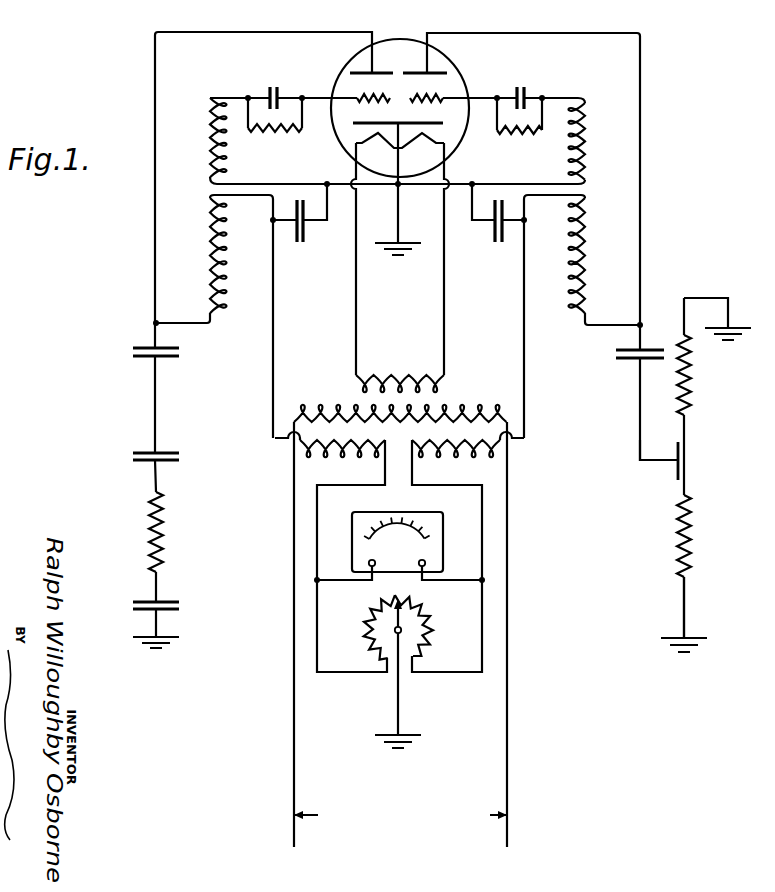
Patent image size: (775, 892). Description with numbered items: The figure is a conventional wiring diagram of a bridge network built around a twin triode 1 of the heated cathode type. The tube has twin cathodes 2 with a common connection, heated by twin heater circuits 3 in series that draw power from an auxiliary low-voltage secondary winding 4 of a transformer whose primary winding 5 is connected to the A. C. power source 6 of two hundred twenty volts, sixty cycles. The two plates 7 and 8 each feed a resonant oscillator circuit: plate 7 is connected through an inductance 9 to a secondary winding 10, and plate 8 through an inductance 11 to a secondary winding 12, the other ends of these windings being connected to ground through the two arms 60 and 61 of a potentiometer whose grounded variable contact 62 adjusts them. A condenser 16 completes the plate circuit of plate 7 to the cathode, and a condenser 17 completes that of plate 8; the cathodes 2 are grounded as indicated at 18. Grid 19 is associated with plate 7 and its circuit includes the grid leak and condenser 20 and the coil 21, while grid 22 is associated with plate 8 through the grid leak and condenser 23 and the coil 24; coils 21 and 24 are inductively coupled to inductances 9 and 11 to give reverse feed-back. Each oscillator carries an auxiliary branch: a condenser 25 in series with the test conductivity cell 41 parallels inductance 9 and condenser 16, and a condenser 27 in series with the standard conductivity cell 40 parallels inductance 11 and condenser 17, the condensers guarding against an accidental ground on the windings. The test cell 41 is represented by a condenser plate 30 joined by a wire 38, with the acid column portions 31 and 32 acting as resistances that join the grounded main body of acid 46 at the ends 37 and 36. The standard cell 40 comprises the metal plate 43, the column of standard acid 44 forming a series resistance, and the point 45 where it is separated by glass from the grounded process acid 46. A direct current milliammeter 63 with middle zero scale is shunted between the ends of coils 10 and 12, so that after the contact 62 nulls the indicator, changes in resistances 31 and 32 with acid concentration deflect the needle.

The twin triode 1 is at (343, 153).
The cathodes 2 is at (347, 127).
The heater circuits 3 is at (380, 138).
The auxiliary low-voltage secondary winding 4 is at (382, 374).
The primary winding 5 is at (322, 405).
The A. C. power source 6 is at (418, 810).
The plate 7 is at (435, 67).
The plate 8 is at (352, 70).
The inductance 9 is at (575, 312).
The secondary winding 10 is at (470, 455).
The inductance 11 is at (224, 314).
The secondary winding 12 is at (330, 452).
The condenser 16 is at (496, 243).
The condenser 17 is at (300, 243).
The ground 18 is at (398, 206).
The grid 19 is at (436, 92).
The grid leak and condenser 20 is at (530, 105).
The coil 21 is at (587, 118).
The grid 22 is at (358, 97).
The grid leak and condenser 23 is at (260, 104).
The coil 24 is at (210, 97).
The condenser 25 is at (616, 356).
The condenser 27 is at (180, 355).
The condenser plate 30 is at (674, 468).
The resistance 31 is at (690, 402).
The resistance 32 is at (692, 532).
The lower end 36 is at (687, 588).
The upper end 37 is at (684, 318).
The wire 38 is at (639, 449).
The standard conductivity cell 40 is at (150, 710).
The test conductivity cell 41 is at (661, 708).
The metal plate 43 is at (135, 454).
The column of standard acid 44 is at (148, 522).
The acid body point 45 is at (148, 600).
The body of process acid 46 is at (144, 612).
The potentiometer arm 60 is at (430, 637).
The potentiometer arm 61 is at (368, 640).
The variable contact 62 is at (396, 690).
The milliammeter 63 is at (443, 552).